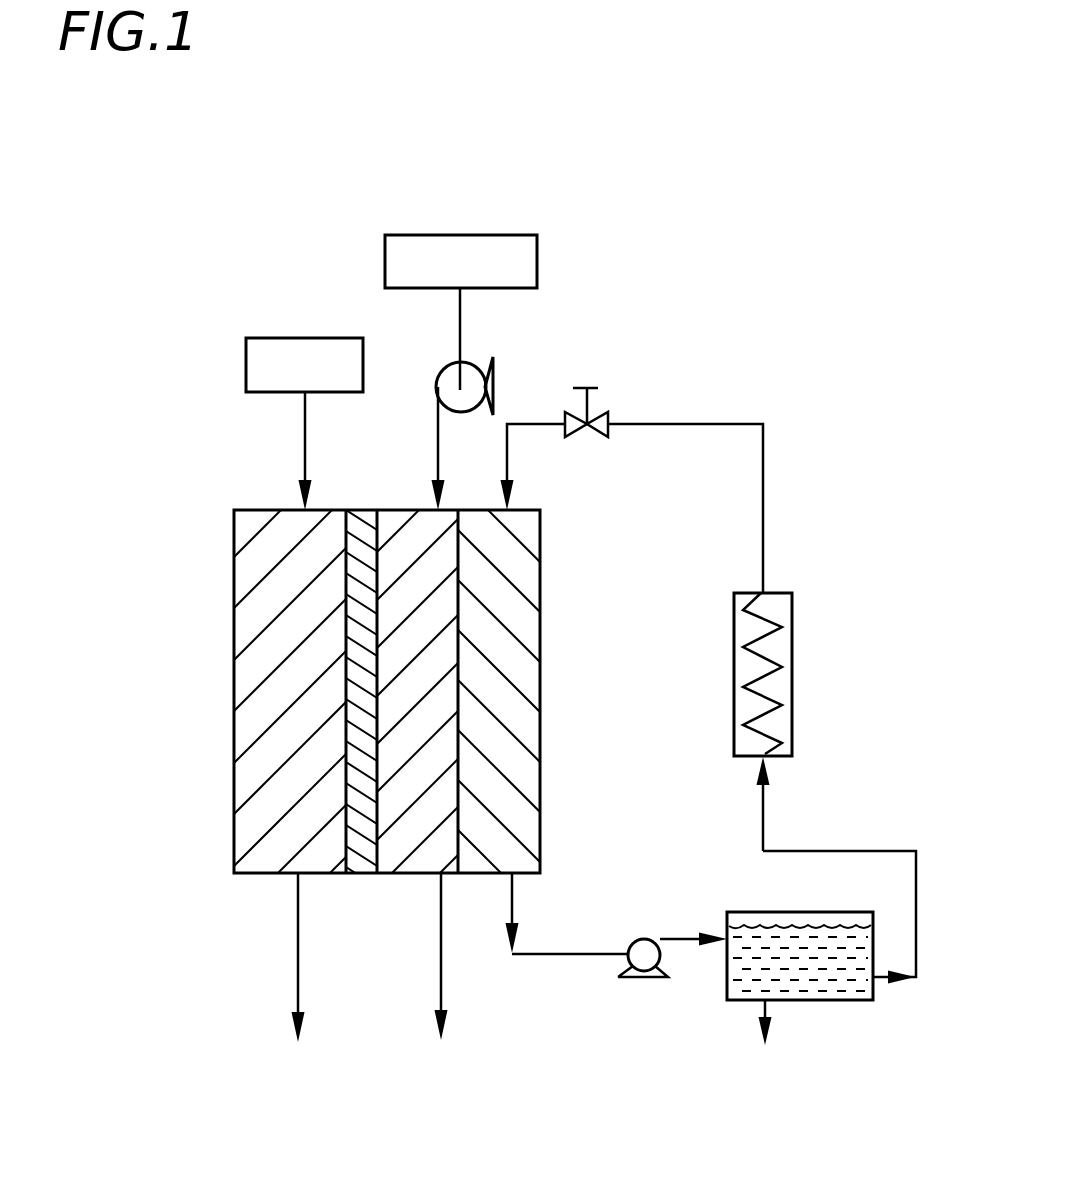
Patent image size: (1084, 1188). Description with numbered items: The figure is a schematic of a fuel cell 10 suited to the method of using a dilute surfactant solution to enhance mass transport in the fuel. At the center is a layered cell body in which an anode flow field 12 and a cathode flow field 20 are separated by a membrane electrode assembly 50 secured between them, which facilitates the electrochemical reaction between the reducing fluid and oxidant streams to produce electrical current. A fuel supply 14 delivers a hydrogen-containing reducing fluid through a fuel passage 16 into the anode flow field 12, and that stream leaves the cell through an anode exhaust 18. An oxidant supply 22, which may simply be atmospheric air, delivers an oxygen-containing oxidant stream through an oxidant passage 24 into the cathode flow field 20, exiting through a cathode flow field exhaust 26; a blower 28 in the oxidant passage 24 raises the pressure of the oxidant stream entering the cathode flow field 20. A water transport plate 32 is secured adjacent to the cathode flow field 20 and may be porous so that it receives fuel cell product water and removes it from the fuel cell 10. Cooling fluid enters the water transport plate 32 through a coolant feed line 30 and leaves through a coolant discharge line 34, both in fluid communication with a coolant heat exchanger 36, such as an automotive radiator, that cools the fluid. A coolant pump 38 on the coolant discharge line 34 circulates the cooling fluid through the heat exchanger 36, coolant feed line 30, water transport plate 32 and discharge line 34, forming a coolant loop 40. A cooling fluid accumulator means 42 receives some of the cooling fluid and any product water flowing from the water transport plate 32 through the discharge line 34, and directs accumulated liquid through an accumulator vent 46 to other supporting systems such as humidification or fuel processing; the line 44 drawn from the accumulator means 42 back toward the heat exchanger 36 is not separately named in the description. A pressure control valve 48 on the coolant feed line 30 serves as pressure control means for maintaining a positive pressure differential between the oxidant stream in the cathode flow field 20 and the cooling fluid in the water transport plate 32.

The fuel cell 10 is at (190, 605).
The anode flow field 12 is at (260, 723).
The fuel supply 14 is at (276, 345).
The fuel passage 16 is at (305, 425).
The anode exhaust 18 is at (298, 973).
The cathode flow field 20 is at (417, 530).
The oxidant supply 22 is at (447, 235).
The oxidant passage 24 is at (463, 318).
The cathode flow field exhaust 26 is at (443, 988).
The blower 28 is at (450, 382).
The coolant feed line 30 is at (523, 424).
The water transport plate 32 is at (518, 628).
The coolant discharge line 34 is at (513, 908).
The coolant heat exchanger 36 is at (783, 683).
The coolant pump 38 is at (650, 948).
The coolant loop 40 is at (815, 489).
The cooling fluid accumulator means 42 is at (843, 988).
The return line 44 is at (862, 851).
The accumulator vent 46 is at (763, 1041).
The pressure control valve 48 is at (568, 428).
The membrane electrode assembly 50 is at (366, 855).